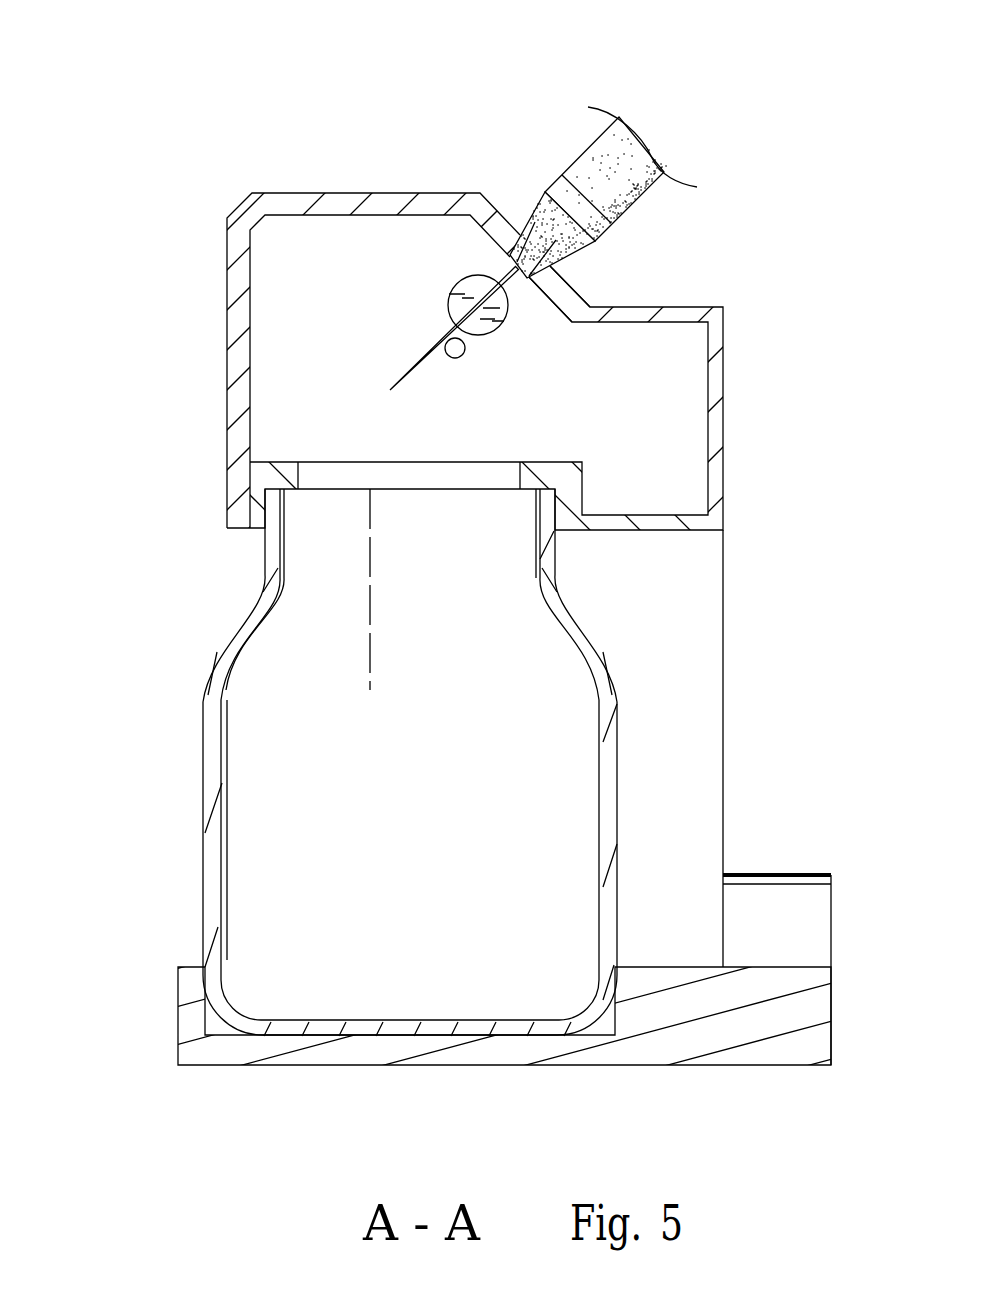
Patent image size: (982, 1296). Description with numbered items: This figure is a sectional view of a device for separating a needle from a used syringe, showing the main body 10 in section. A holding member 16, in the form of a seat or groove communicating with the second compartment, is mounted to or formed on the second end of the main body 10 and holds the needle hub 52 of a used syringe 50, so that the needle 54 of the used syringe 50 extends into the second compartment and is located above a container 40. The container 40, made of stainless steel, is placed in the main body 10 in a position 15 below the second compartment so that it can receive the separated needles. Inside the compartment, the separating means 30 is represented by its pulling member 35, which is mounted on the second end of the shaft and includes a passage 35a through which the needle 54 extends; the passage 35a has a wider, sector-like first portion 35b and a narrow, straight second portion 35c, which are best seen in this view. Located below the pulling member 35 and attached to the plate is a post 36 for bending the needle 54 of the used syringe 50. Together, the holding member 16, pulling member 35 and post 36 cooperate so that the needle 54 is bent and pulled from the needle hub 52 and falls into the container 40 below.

The main body 10 is at (534, 621).
The position 15 is at (213, 1020).
The holding member 16 is at (527, 275).
The separating means 30 is at (466, 237).
The pulling member 35 is at (508, 237).
The passage 35a is at (485, 287).
The first portion 35b is at (493, 315).
The second portion 35c is at (463, 340).
The post 36 is at (445, 335).
The container 40 is at (272, 800).
The used syringe 50 is at (598, 165).
The needle hub 52 is at (522, 237).
The needle 54 is at (410, 382).